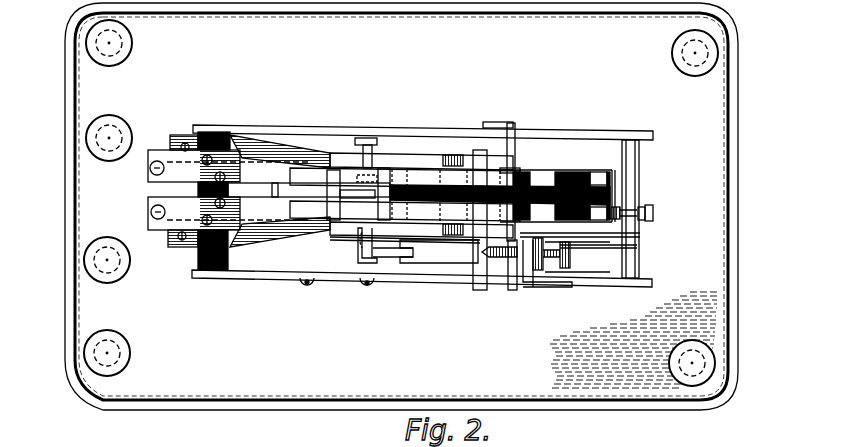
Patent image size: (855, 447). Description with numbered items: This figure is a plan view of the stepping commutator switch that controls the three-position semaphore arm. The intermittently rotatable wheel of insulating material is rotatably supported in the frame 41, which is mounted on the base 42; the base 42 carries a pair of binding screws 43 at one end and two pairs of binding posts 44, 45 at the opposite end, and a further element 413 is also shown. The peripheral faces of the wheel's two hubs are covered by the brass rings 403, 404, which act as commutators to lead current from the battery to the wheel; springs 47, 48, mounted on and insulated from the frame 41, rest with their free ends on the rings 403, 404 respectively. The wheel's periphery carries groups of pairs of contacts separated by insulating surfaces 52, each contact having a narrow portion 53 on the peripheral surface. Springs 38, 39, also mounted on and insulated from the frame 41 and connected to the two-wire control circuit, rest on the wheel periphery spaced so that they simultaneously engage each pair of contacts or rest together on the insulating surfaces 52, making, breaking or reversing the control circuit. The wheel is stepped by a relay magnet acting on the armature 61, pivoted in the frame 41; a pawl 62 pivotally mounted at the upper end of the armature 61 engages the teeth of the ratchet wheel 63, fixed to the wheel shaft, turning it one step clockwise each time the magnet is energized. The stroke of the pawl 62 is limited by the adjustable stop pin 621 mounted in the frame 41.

The spring 38 is at (428, 213).
The spring 39 is at (416, 176).
The frame 41 is at (286, 126).
The base 42 is at (646, 399).
The binding screws 43 is at (700, 74).
The binding posts 44 is at (122, 272).
The binding posts 45 is at (124, 56).
The spring 47 is at (446, 159).
The spring 48 is at (288, 231).
The insulating surfaces 52 is at (567, 173).
The narrow portion 53 is at (600, 209).
The armature 61 is at (370, 240).
The pawl 62 is at (420, 256).
The ratchet wheel 63 is at (506, 262).
The brass ring 403 is at (600, 233).
The brass ring 404 is at (518, 160).
The corner wheel 413 is at (683, 341).
The adjustable stop pin 621 is at (552, 258).